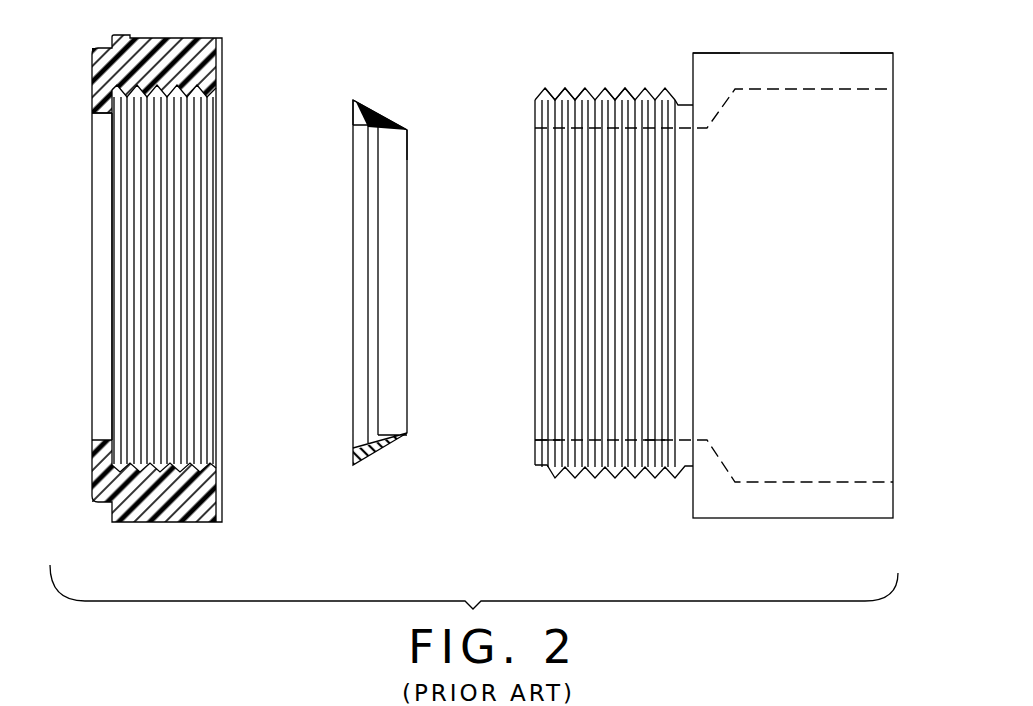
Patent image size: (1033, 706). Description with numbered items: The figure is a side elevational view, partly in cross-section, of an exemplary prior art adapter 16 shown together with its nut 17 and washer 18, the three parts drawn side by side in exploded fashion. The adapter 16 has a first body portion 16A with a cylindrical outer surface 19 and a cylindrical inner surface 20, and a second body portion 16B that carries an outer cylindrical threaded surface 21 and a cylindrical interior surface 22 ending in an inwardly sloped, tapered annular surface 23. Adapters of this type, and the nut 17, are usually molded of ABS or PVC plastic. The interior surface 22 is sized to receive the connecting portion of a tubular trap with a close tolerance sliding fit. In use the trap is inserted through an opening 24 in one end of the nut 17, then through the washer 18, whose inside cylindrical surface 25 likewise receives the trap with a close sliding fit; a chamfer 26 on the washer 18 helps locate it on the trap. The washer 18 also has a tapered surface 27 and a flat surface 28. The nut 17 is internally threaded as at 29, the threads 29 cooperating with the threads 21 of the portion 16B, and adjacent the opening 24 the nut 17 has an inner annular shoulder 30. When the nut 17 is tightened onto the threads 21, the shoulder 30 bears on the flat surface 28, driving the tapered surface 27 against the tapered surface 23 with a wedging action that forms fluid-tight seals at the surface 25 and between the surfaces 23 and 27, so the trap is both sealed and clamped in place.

The adapter 16 is at (765, 520).
The first body portion 16A is at (870, 52).
The second body portion 16B is at (617, 90).
The nut 17 is at (172, 523).
The washer 18 is at (385, 447).
The cylindrical outer surface 19 is at (714, 52).
The cylindrical inner surface 20 is at (790, 480).
The outer cylindrical threaded surface 21 is at (576, 88).
The cylindrical interior surface 22 is at (655, 438).
The tapered annular surface 23 is at (548, 442).
The opening 24 is at (97, 118).
The inside cylindrical surface 25 is at (398, 135).
The chamfer 26 is at (368, 130).
The tapered surface 27 is at (385, 125).
The flat surface 28 is at (353, 111).
The internal threads 29 is at (195, 93).
The inner annular shoulder 30 is at (120, 452).